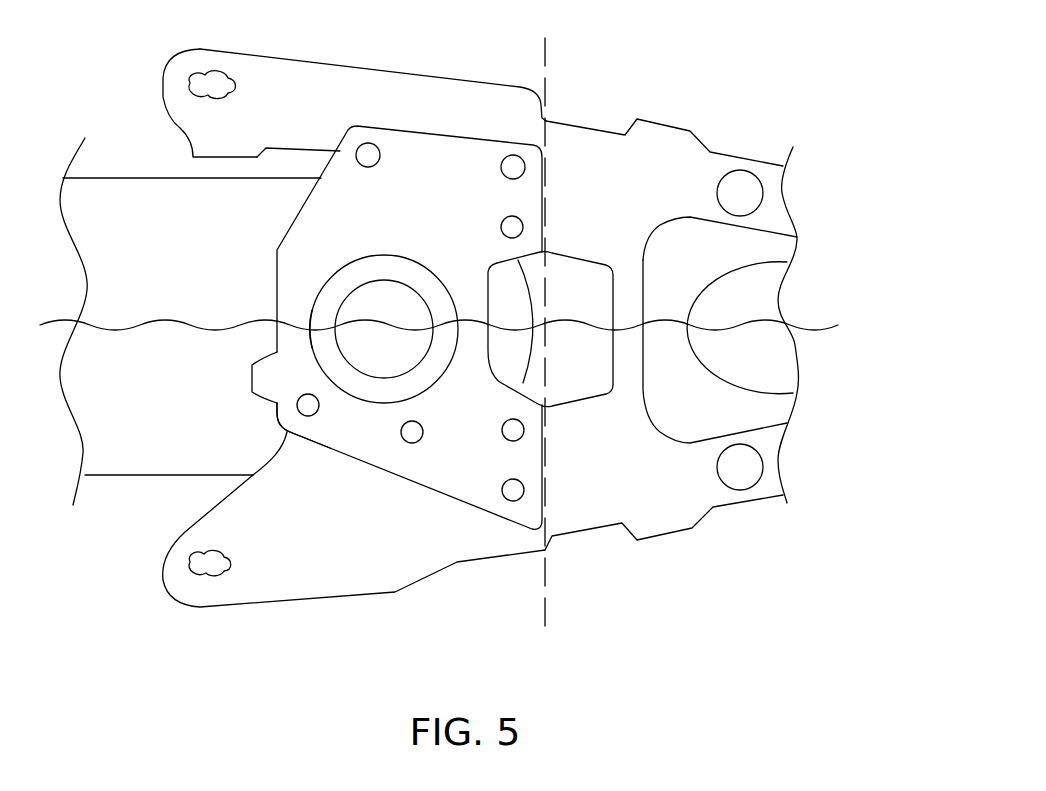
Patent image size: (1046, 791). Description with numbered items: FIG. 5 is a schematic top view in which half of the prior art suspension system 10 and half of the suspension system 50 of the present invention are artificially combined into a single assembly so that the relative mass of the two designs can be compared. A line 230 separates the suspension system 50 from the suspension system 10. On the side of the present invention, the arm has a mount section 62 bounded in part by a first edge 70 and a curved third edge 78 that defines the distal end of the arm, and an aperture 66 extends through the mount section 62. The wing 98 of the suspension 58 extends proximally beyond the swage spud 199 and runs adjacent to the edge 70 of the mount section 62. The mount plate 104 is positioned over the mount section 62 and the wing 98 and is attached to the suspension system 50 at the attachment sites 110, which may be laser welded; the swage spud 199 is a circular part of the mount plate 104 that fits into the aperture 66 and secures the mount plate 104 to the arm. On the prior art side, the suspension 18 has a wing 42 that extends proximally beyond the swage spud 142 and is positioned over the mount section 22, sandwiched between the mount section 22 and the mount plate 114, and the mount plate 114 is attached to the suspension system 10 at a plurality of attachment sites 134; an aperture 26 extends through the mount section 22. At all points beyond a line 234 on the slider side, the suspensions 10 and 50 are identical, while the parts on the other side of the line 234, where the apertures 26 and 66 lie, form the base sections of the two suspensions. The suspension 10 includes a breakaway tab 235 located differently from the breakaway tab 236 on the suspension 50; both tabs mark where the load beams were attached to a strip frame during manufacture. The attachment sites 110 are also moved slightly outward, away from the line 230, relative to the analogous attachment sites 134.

The suspension system 10 is at (391, 629).
The suspension 18 is at (672, 533).
The mount section 22 is at (230, 462).
The aperture 26 is at (376, 311).
The second wing 42 is at (240, 608).
The suspension system 50 is at (420, 44).
The suspension 58 is at (657, 121).
The mount section 62 is at (180, 277).
The aperture 66 is at (398, 315).
The first edge 70 is at (171, 178).
The third edge 78 is at (529, 287).
The wing 98 is at (262, 50).
The mount plate 104 is at (300, 210).
The attachment sites 110 is at (501, 164).
The mount plate 114 is at (273, 416).
The attachment sites 134 is at (319, 408).
The swage spud 142 is at (310, 340).
The swage spud 199 is at (409, 256).
The line 230 is at (833, 326).
The line 234 is at (545, 619).
The breakaway tab 235 is at (252, 378).
The breakaway tab 236 is at (222, 156).